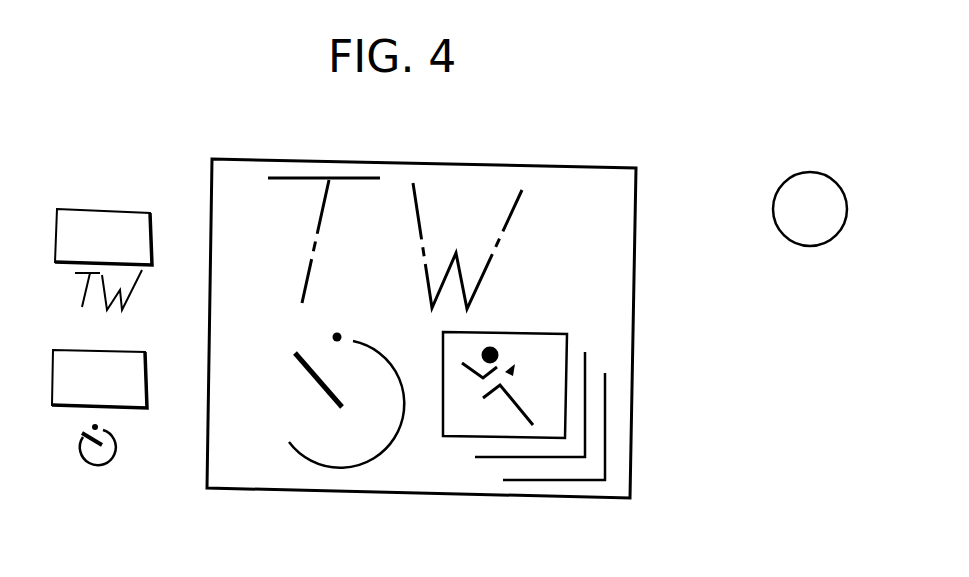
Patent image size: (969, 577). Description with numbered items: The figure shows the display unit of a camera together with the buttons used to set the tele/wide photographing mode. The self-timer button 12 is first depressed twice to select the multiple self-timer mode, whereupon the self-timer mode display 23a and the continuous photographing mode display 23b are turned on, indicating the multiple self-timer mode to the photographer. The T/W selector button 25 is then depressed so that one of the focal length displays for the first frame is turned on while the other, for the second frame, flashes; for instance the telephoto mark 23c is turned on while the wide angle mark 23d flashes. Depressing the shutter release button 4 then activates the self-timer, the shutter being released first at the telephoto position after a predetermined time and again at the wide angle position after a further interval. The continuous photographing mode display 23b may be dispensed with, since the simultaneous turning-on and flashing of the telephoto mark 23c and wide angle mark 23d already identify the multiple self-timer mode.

The shutter release button 4 is at (802, 238).
The self-timer button 12 is at (143, 375).
The T/W selector button 25 is at (132, 215).
The self-timer mode display 23a is at (365, 463).
The continuous photographing mode display 23b is at (543, 472).
The telephoto mark 23c is at (303, 178).
The wide angle mark 23d is at (522, 190).